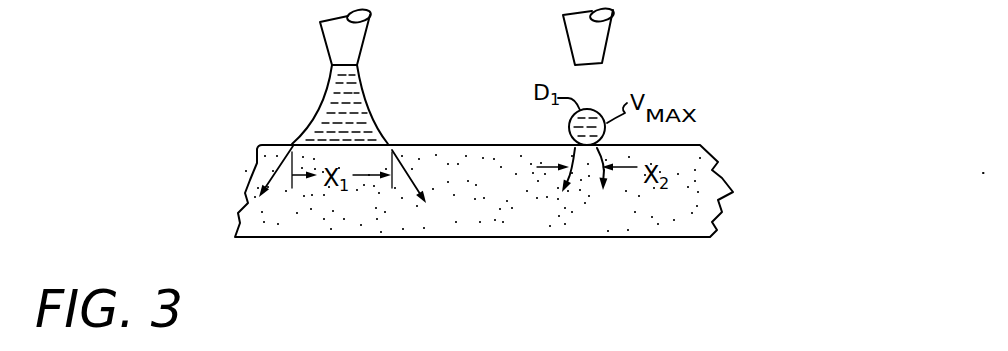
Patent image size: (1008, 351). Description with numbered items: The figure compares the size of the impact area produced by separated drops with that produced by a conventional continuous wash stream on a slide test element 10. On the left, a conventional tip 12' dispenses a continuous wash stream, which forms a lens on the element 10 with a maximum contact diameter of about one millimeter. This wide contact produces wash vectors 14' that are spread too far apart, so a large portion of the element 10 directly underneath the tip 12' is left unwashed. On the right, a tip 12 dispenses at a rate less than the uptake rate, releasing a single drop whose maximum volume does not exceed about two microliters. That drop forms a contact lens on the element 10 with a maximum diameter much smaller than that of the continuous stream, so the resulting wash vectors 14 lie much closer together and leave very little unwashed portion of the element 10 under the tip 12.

The element 10 is at (445, 232).
The tip 12 is at (610, 36).
The conventional tip 12' is at (329, 76).
The wash vectors 14 is at (589, 208).
The wash vectors 14' is at (322, 157).